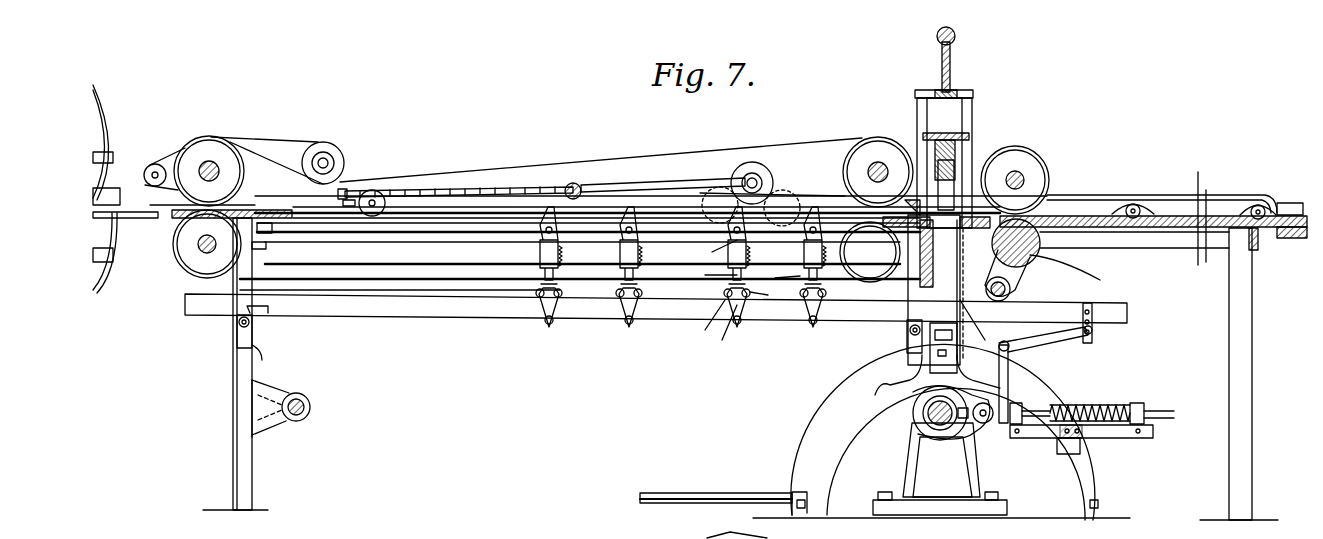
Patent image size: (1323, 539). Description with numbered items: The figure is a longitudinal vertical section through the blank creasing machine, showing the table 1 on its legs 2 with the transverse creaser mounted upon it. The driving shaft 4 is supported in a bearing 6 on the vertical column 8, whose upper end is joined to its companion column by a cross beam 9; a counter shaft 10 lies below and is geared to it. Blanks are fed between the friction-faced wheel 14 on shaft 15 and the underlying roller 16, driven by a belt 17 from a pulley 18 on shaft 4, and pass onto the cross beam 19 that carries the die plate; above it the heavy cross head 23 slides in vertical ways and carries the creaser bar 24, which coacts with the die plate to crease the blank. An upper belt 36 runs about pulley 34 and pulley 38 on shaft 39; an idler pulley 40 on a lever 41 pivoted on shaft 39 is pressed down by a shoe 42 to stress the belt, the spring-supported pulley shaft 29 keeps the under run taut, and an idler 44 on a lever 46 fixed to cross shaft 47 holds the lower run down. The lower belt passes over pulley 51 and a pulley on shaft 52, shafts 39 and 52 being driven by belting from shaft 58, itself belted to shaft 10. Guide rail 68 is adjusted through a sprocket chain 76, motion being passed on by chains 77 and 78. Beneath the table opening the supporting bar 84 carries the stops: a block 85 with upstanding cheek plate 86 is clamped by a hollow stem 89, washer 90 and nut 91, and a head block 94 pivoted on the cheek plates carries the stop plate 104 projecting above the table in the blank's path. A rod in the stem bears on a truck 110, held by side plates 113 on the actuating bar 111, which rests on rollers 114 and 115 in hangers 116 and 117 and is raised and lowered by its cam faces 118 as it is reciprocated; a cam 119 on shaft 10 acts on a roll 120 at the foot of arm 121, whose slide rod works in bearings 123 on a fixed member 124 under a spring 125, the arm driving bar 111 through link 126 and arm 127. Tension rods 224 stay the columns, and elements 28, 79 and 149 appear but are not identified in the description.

The table 1 is at (1155, 233).
The legs 2 is at (252, 460).
The driving shaft 4 is at (1020, 283).
The bearing 6 is at (978, 320).
The side frame or column 8 is at (862, 385).
The cross beam 9 is at (955, 42).
The counter shaft 10 is at (942, 425).
The feed pulley or wheel 14 is at (1035, 175).
The shaft 15 is at (1020, 174).
The underlying roller 16 is at (1035, 245).
The belt 17 is at (1077, 271).
The pulley 18 is at (1010, 296).
The cross beam 19 is at (933, 260).
The cross head 23 is at (965, 133).
The creaser bar 24 is at (957, 175).
The wedge 28 is at (912, 204).
The pulley shaft 29 is at (883, 165).
The pulley 34 is at (869, 137).
The belt 36 is at (568, 160).
The pulley 38 is at (209, 136).
The shaft 39 is at (215, 165).
The idler pulley 40 is at (340, 150).
The lever 41 is at (292, 145).
The shoe 42 is at (158, 165).
The idler 44 is at (750, 162).
The lever 46 is at (648, 181).
The cross shaft 47 is at (578, 183).
The pulley 51 is at (192, 272).
The shaft 52 is at (198, 246).
The shaft 58 is at (310, 412).
The guide bar or rail 68 is at (358, 195).
The sprocket chain 76 is at (458, 189).
The chain 77 is at (1095, 197).
The chain 78 is at (1170, 197).
The bar 79 is at (509, 288).
The supporting bar 84 is at (576, 252).
The block or casting 85 is at (800, 258).
The cheek plate 86 is at (718, 254).
The hollow threaded stem 89 is at (755, 295).
The washer 90 is at (789, 277).
The nut 91 is at (710, 273).
The head block or casing 94 is at (711, 229).
The stop plate 104 is at (735, 209).
The truck 110 is at (709, 315).
The actuating bar 111 is at (400, 298).
The side plates 113 is at (731, 323).
The roller 114 is at (930, 335).
The roller 115 is at (252, 330).
The hanger 116 is at (907, 345).
The hanger 117 is at (257, 356).
The cam faces 118 is at (915, 312).
The cam 119 is at (975, 425).
The roll 120 is at (962, 398).
The arm 121 is at (1010, 370).
The bearings 123 is at (1055, 393).
The fixed supporting member 124 is at (1110, 438).
The spring 125 is at (1108, 393).
The link 126 is at (1050, 343).
The arm 127 is at (1092, 328).
The bar 149 is at (130, 218).
The stays or tension rods 224 is at (720, 490).